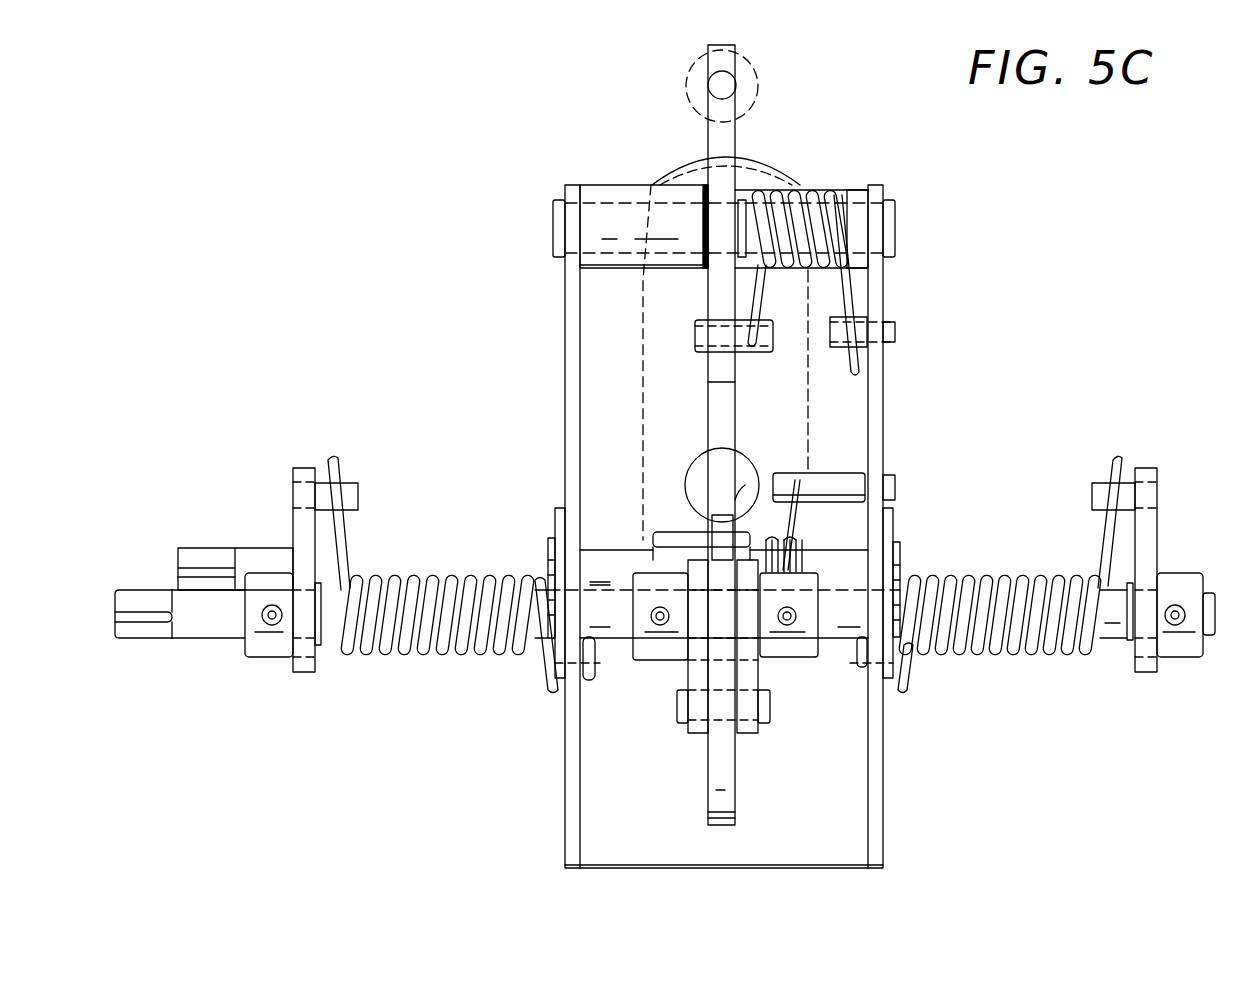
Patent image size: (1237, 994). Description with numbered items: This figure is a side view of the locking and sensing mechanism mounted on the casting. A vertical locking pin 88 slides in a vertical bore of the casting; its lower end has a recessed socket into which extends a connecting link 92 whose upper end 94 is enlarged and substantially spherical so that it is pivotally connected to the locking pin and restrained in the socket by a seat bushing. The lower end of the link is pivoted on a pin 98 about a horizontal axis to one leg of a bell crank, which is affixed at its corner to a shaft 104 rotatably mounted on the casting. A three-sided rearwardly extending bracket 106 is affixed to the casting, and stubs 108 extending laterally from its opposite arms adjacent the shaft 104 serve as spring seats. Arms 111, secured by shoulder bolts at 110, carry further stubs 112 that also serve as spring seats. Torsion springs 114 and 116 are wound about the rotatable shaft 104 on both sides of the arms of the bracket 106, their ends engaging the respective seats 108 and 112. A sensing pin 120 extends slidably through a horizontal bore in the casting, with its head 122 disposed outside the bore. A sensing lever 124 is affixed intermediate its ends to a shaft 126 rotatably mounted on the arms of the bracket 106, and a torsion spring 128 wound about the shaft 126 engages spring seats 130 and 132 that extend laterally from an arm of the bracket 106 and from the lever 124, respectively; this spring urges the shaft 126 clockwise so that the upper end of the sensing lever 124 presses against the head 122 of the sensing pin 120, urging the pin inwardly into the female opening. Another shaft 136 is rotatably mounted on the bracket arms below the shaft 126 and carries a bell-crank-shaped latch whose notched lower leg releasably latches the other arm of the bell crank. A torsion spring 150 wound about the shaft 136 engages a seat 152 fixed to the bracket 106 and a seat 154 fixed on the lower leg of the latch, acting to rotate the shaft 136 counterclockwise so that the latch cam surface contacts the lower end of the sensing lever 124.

The vertical locking pin 88 is at (810, 460).
The connecting link 92 is at (720, 665).
The upper end of connecting link 94 is at (742, 455).
The pin 98 is at (770, 700).
The shaft 104 is at (172, 590).
The bracket 106 is at (885, 378).
The stubs 108 is at (588, 678).
The shoulder bolts 110 is at (272, 625).
The arms 111 is at (305, 672).
The stubs 112 is at (356, 480).
The torsion spring 114 is at (462, 655).
The torsion spring 116 is at (1048, 655).
The sensing pin 120 is at (745, 90).
The head of sensing pin 122 is at (748, 70).
The sensing lever 124 is at (718, 290).
The shaft 126 is at (862, 240).
The torsion spring 128 is at (805, 190).
The spring seat 130 is at (895, 318).
The spring seat 132 is at (762, 340).
The shaft 136 is at (805, 555).
The torsion spring 150 is at (797, 530).
The seat 152 is at (848, 480).
The seat 154 is at (775, 652).